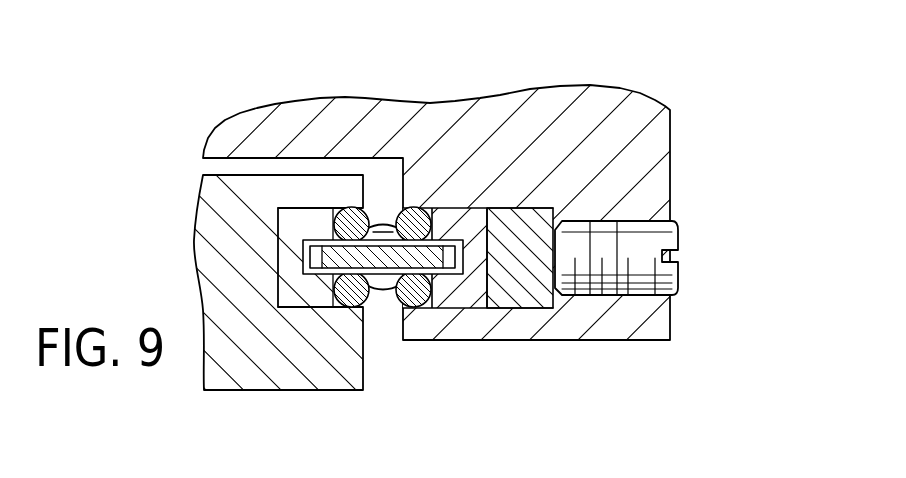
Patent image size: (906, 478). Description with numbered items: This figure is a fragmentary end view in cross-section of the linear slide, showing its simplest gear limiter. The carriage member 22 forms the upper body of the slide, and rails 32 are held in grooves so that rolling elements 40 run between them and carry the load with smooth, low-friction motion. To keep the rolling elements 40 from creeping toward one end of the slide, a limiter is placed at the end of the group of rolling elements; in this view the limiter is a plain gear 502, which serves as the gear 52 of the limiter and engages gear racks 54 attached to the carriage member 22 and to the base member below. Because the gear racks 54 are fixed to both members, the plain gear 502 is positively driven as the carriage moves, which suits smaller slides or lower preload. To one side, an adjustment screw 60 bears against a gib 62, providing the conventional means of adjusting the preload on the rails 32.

The carriage member 22 is at (488, 118).
The rails 32 is at (353, 222).
The rolling elements 40 is at (386, 232).
The gears 52 is at (338, 259).
The plain gear 502 is at (385, 260).
The gear racks 54 is at (297, 300).
The adjustment screws 60 is at (663, 238).
The gib 62 is at (522, 287).